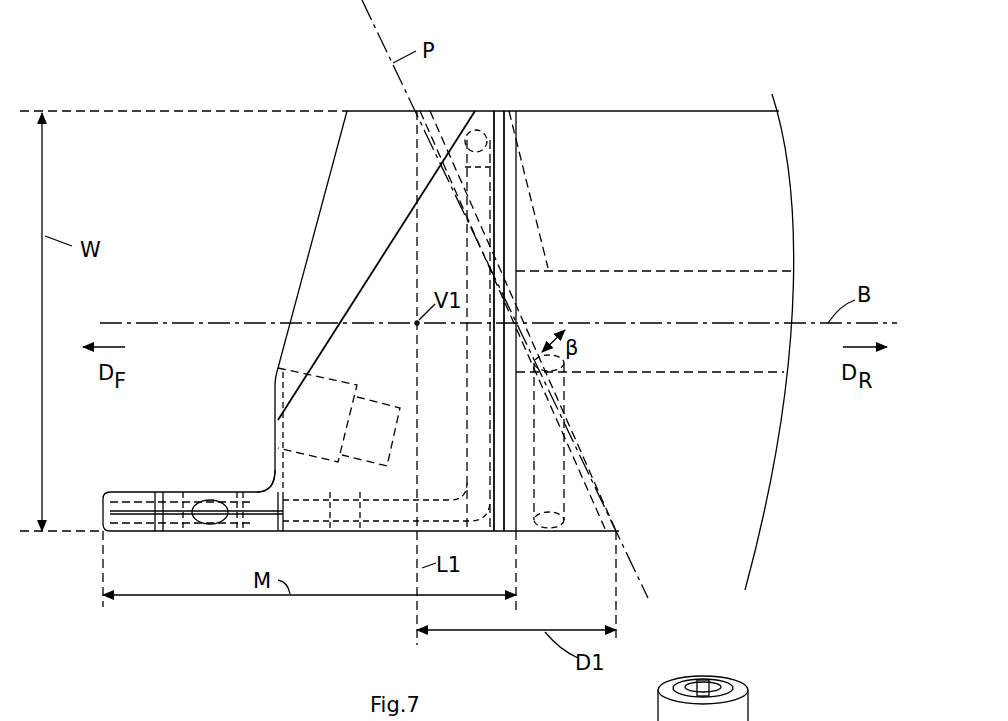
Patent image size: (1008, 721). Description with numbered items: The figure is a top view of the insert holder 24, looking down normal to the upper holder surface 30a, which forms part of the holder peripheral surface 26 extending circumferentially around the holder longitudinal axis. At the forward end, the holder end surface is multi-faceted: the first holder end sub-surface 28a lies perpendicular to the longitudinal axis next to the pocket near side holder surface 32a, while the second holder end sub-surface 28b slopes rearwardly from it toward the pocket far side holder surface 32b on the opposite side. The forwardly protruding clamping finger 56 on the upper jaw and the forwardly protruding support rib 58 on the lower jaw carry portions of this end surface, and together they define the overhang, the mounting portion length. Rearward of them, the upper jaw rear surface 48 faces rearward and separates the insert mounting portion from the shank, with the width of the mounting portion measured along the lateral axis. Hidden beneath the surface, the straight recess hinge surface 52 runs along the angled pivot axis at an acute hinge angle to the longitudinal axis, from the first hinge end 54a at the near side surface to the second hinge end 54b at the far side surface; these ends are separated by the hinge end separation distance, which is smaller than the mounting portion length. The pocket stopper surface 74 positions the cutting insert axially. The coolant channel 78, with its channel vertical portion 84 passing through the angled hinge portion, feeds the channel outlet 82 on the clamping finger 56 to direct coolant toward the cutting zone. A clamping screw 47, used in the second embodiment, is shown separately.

The insert holder 24 is at (308, 180).
The holder peripheral surface 26 is at (675, 111).
The first holder end sub-surface 28a is at (278, 417).
The second holder end sub-surface 28b is at (305, 258).
The upper holder surface 30a is at (717, 219).
The pocket near side holder surface 32a is at (580, 533).
The pocket far side holder surface 32b is at (596, 111).
The clamping screw 47 is at (730, 720).
The upper jaw rear surface 48 is at (512, 150).
The recess hinge surface 52 is at (428, 145).
The first hinge end 54a is at (612, 520).
The second hinge end 54b is at (418, 112).
The clamping finger 56 is at (238, 480).
The support rib 58 is at (113, 480).
The pocket stopper surface 74 is at (345, 533).
The coolant channel 78 is at (674, 352).
The channel outlet 82 is at (205, 500).
The channel vertical portion 84 is at (510, 111).